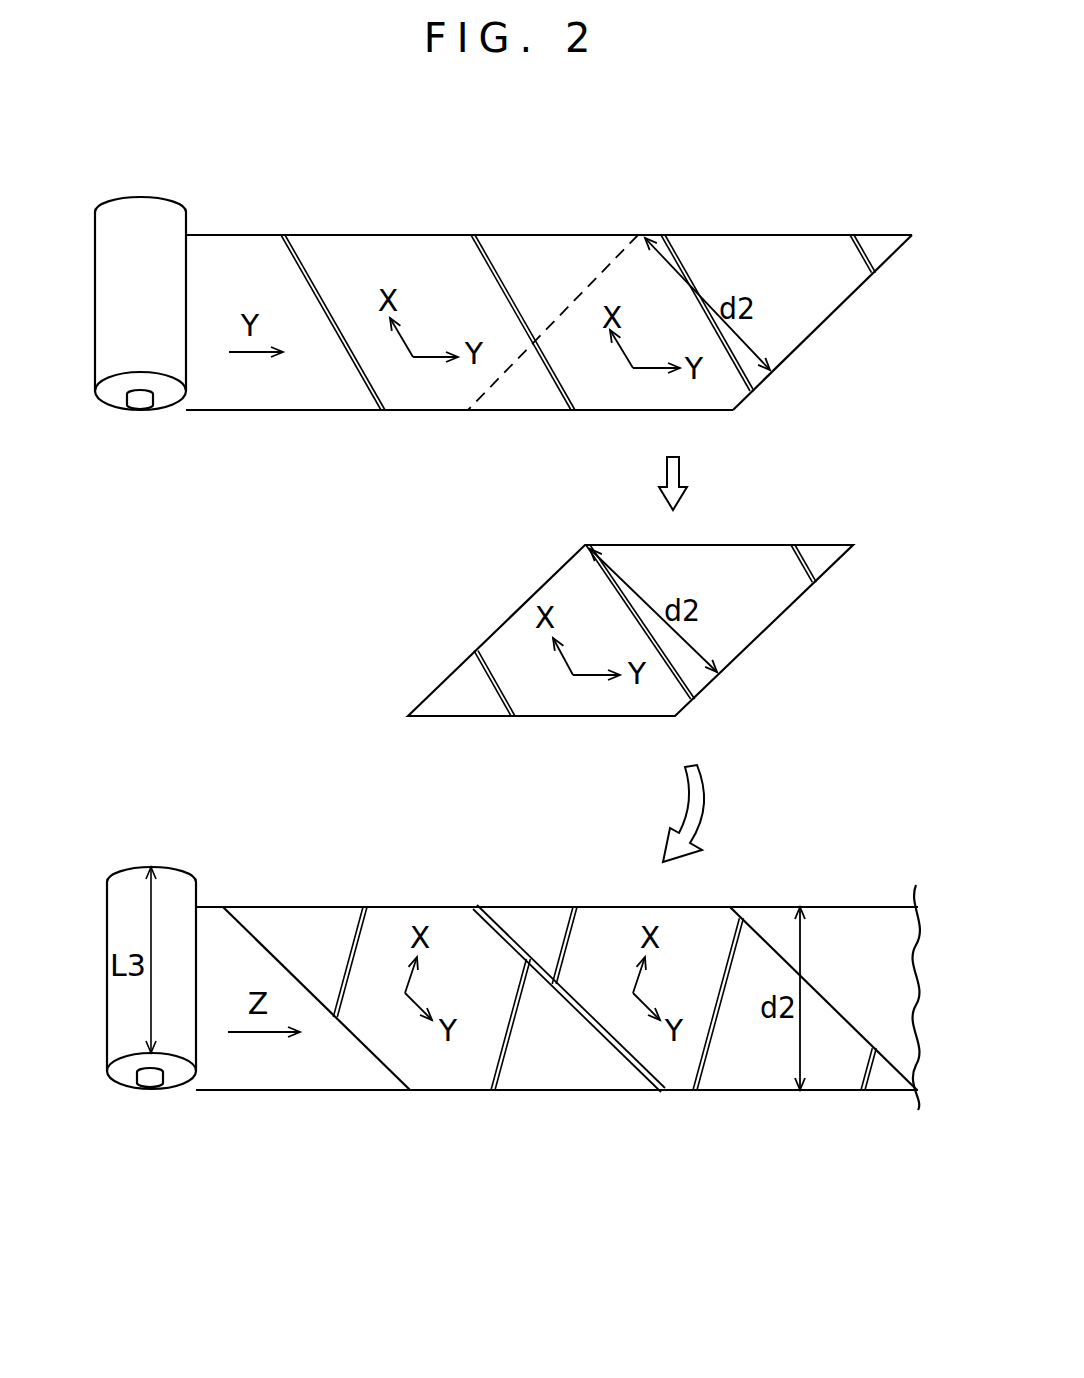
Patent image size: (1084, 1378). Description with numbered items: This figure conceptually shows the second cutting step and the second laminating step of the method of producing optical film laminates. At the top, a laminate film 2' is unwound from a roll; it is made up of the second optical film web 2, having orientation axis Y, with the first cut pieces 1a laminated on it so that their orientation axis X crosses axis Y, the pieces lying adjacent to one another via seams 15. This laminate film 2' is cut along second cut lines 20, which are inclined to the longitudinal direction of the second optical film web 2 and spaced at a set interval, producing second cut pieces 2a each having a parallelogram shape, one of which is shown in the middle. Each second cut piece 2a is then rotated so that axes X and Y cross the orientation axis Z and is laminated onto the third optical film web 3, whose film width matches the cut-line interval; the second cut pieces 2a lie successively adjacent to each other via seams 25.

The second optical film web 2 is at (549, 285).
The laminate film 2' is at (779, 165).
The seam 15 is at (306, 263).
The second cut line 20 is at (610, 267).
The first cut piece 1a is at (413, 393).
The second cut piece 2a is at (795, 632).
The seam 25 is at (507, 937).
The third optical film web 3 is at (267, 1072).